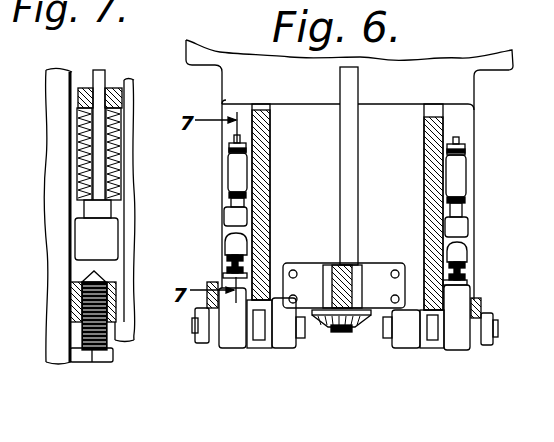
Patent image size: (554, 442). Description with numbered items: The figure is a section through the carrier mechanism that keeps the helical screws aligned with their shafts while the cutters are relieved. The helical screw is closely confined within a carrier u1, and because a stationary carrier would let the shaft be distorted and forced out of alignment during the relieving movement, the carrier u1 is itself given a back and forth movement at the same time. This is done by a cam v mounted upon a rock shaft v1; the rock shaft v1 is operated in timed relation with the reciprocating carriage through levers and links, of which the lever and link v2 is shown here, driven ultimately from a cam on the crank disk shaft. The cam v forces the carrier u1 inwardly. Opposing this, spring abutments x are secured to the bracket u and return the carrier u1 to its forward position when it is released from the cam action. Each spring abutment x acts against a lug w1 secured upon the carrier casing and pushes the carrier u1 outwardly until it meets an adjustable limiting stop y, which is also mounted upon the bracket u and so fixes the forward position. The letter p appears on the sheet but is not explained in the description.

In FIG. 7, the bracket u is at (50, 257).
In FIG. 6, the bracket u is at (297, 212).
In FIG. 7, the carrier u1 is at (117, 196).
In FIG. 6, the carrier u1 is at (262, 173).
In FIG. 7, the spring abutment x is at (180, 165).
In FIG. 6, the spring abutment x is at (235, 172).
In FIG. 7, the lug w1 is at (100, 233).
In FIG. 6, the lug w1 is at (172, 230).
In FIG. 7, the adjustable limiting stop y is at (113, 296).
In FIG. 6, the adjustable limiting stop y is at (186, 258).
In FIG. 6, the cam v is at (255, 338).
In FIG. 6, the rock shaft v1 is at (267, 338).
In FIG. 6, the lever and link v2 is at (207, 305).
In FIG. 6, the plate p is at (461, 7).